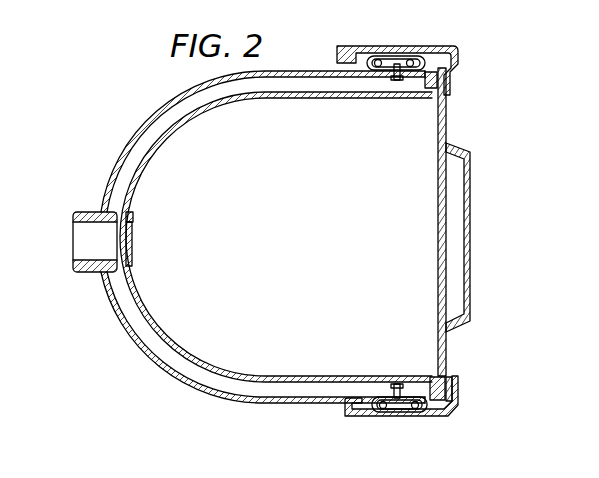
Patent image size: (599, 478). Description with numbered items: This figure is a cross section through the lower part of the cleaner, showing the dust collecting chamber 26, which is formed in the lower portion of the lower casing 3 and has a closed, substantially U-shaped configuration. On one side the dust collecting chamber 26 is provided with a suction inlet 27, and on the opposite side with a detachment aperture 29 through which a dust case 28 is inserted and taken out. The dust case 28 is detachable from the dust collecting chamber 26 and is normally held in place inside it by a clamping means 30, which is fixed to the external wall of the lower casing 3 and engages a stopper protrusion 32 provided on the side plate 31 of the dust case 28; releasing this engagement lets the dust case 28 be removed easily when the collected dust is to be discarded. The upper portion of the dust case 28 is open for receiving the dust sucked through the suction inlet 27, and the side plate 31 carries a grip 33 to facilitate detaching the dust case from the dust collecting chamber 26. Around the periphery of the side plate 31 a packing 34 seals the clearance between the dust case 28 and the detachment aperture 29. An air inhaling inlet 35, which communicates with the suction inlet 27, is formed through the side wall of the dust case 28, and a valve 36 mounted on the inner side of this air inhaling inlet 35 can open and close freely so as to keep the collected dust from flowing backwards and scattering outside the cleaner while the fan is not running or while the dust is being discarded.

The lower casing 3 is at (146, 353).
The dust collecting chamber 26 is at (137, 319).
The suction inlet 27 is at (74, 238).
The dust case 28 is at (180, 357).
The detachment aperture 29 is at (430, 377).
The clamping means 30 is at (448, 423).
The side plate 31 is at (444, 113).
The stopper protrusion 32 is at (452, 414).
The grip 33 is at (471, 189).
The packing 34 is at (455, 387).
The air inhaling inlet 35 is at (132, 249).
The valve 36 is at (133, 238).